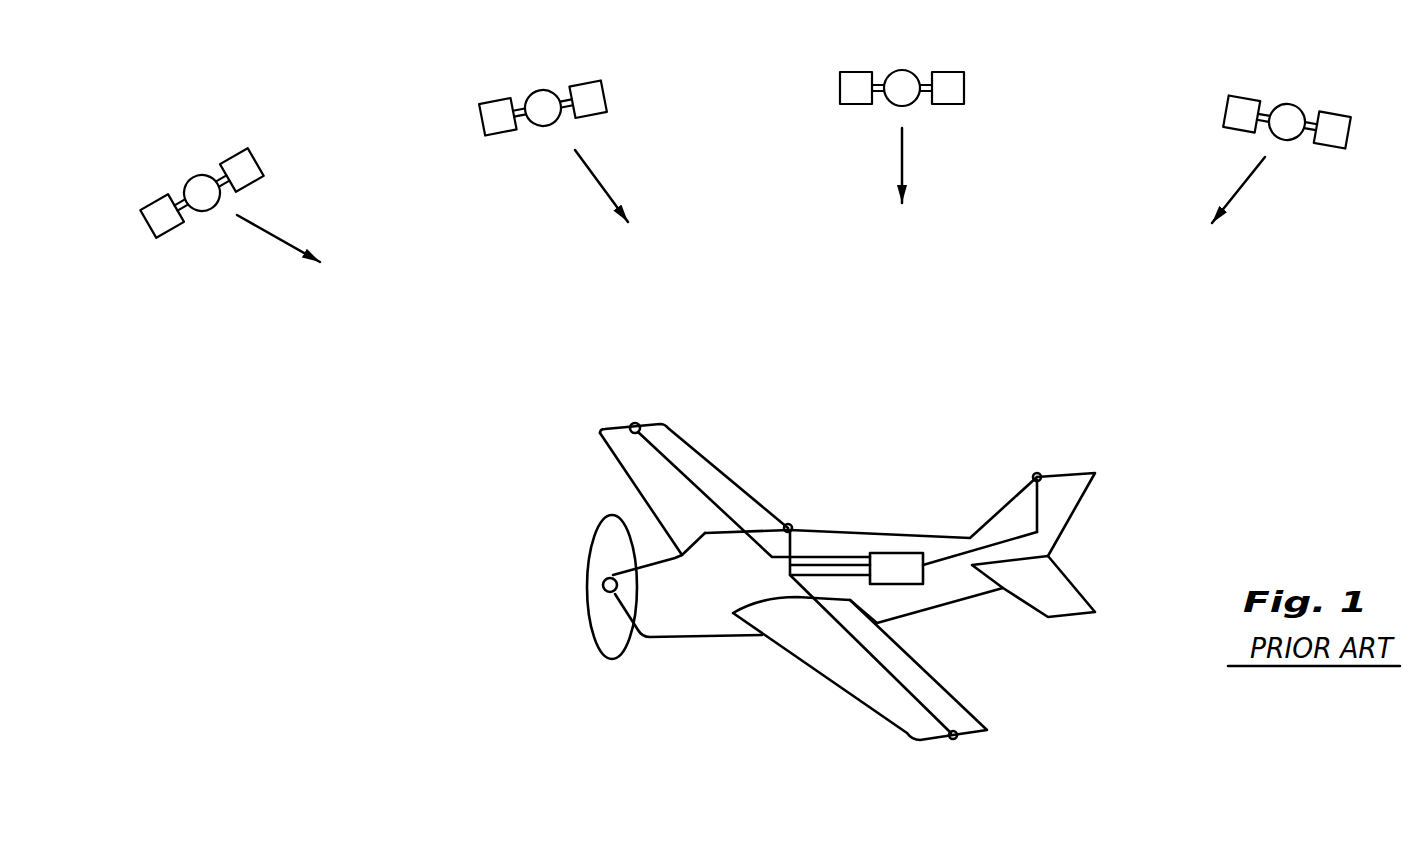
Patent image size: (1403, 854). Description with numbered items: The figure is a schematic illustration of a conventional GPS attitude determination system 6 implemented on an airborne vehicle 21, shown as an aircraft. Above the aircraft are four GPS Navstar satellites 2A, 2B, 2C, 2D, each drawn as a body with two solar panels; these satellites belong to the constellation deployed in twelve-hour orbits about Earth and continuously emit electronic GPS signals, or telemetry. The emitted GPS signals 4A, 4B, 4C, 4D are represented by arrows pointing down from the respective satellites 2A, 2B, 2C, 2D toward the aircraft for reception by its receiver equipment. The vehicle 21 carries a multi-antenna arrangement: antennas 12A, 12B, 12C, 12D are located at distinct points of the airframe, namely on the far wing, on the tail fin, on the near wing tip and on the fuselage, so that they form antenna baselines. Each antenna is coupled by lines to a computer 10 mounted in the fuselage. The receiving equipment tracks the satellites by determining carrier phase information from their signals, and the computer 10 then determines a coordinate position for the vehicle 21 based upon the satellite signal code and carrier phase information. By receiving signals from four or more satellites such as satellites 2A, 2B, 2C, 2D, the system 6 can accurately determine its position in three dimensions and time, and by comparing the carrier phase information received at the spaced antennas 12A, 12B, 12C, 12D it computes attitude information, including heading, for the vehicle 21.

The satellite 2A is at (193, 175).
The satellite 2B is at (547, 90).
The satellite 2C is at (908, 72).
The satellite 2D is at (1287, 103).
The GPS signal 4A is at (270, 230).
The GPS signal 4B is at (594, 172).
The GPS signal 4C is at (905, 150).
The GPS signal 4D is at (1247, 180).
The system 6 is at (815, 569).
The computer 10 is at (897, 560).
The antenna 12A is at (635, 423).
The antenna 12B is at (1037, 473).
The antenna 12C is at (954, 740).
The antenna 12D is at (787, 524).
The vehicle 21 is at (1067, 605).